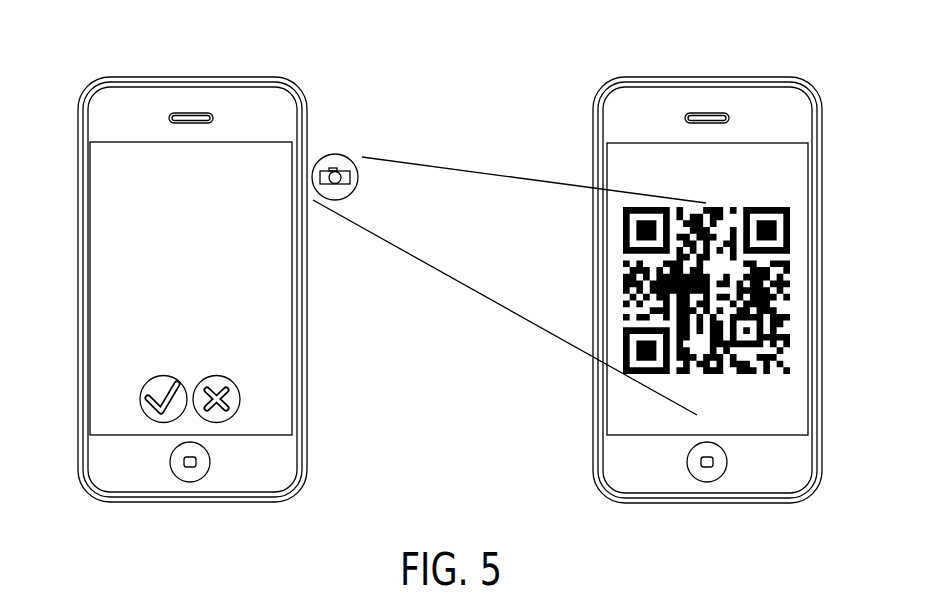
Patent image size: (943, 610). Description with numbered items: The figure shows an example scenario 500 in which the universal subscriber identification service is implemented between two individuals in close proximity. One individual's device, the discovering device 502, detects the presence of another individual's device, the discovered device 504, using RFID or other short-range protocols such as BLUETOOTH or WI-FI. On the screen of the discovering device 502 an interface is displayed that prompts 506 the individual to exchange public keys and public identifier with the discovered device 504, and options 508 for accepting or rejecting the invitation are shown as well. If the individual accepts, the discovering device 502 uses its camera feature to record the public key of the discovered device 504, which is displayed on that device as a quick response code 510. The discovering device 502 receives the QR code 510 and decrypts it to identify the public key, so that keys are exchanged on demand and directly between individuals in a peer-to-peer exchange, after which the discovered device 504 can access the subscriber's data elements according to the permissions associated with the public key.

The example scenario 500 is at (909, 80).
The discovering device 502 is at (78, 80).
The discovered device 504 is at (584, 81).
The prompt 506 is at (88, 228).
The options 508 is at (142, 400).
The quick response (QR) code 510 is at (808, 232).